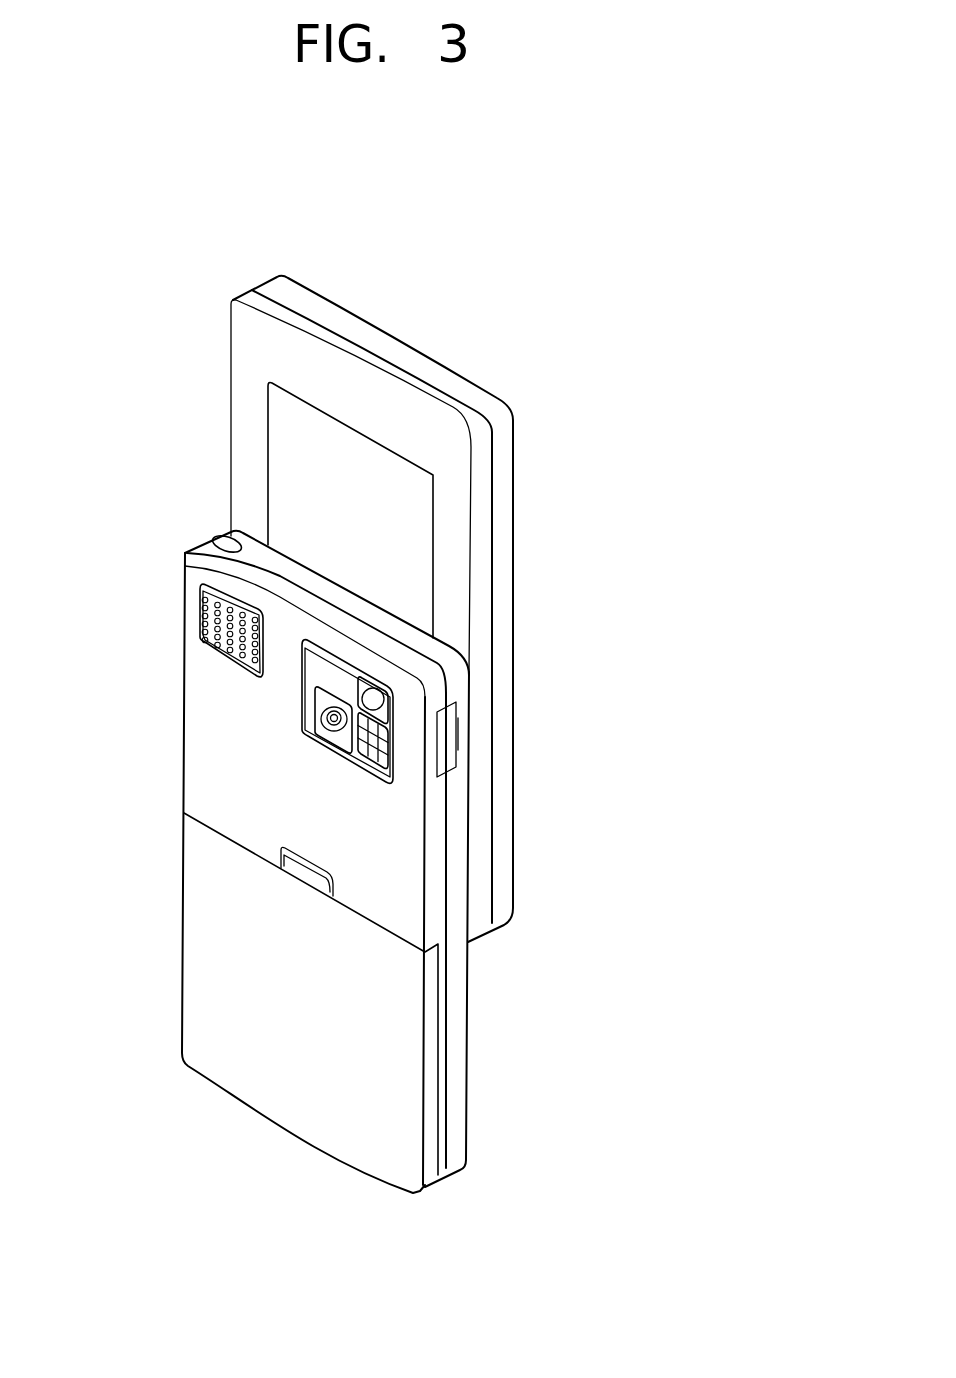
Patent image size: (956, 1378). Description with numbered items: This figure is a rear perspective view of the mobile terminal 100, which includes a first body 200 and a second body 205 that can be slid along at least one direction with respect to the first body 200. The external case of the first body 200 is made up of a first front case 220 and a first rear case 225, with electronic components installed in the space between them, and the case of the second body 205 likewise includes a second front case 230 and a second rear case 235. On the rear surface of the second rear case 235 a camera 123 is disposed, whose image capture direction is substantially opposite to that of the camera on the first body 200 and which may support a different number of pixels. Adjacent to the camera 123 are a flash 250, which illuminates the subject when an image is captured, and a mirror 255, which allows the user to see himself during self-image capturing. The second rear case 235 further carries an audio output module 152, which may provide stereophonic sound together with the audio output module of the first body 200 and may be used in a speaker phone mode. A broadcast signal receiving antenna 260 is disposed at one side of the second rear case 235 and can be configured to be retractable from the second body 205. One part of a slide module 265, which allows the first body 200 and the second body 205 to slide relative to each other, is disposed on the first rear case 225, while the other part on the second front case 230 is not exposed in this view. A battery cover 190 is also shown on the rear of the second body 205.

The mobile terminal 100 is at (527, 337).
The first body 200 is at (207, 373).
The first front case 220 is at (276, 285).
The first rear case 225 is at (258, 297).
The slide module 265 is at (275, 465).
The second body 205 is at (165, 725).
The broadcast signal receiving antenna 260 is at (227, 543).
The audio output module 152 is at (205, 623).
The camera 123 is at (335, 718).
The mirror 255 is at (373, 699).
The flash 250 is at (377, 755).
The battery cover 190 is at (200, 902).
The second rear case 235 is at (435, 910).
The second front case 230 is at (458, 967).